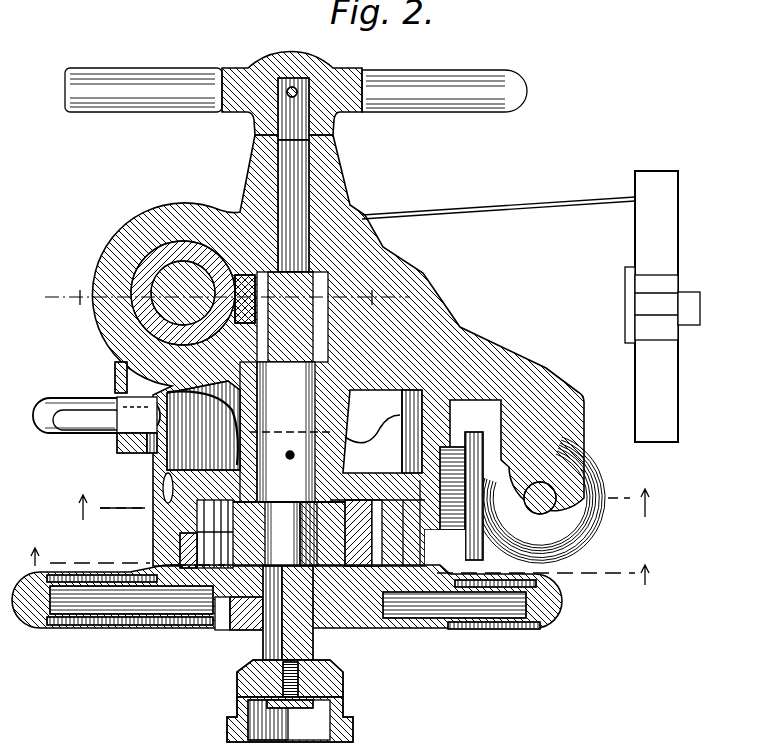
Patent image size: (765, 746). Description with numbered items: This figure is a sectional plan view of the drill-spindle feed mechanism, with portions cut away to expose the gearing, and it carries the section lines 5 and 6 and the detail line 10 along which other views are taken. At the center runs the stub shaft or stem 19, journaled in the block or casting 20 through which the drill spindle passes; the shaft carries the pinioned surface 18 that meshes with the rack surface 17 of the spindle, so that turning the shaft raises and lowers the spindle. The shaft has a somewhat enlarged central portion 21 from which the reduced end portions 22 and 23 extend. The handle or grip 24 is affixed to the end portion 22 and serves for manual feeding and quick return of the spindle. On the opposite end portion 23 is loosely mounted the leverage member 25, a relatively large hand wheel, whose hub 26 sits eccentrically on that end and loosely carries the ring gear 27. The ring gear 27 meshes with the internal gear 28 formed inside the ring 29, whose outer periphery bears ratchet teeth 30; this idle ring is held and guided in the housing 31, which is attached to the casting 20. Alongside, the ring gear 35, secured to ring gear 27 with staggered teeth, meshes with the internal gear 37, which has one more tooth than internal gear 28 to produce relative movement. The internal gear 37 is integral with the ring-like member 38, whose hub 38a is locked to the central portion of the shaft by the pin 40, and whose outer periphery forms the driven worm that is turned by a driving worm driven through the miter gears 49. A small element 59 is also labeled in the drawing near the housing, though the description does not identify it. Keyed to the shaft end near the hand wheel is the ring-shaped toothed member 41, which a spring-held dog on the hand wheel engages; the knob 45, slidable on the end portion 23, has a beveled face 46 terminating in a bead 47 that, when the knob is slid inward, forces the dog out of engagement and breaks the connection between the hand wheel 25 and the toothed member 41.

The handle or grip 24 is at (505, 70).
The reduced end portion of shaft 22 is at (276, 158).
The stub shaft or stem 19 is at (303, 191).
The pinioned surface 18 is at (347, 277).
The block or casting 20 is at (619, 306).
The section line 10- 10 is at (227, 301).
The rack surface 17 is at (352, 509).
The pin 40 is at (290, 451).
The ring-like member 38 is at (248, 477).
The hub of ring-like member 38a is at (286, 534).
The enlarged central portion of shaft 21 is at (382, 431).
The internal gear 37 is at (396, 487).
The miter gears 49 is at (600, 530).
The ring gear 35 is at (445, 548).
The reduced end portion of shaft 23 is at (338, 606).
The ring 29 is at (163, 520).
The internal gear 28 is at (175, 542).
The ratchet teeth 30 is at (180, 558).
The spring 59 is at (162, 480).
The housing 31 is at (153, 458).
The leverage member 25 is at (172, 602).
The ring gear 27 is at (396, 605).
The hub 26 is at (222, 620).
The ring-shaped toothed member 41 is at (245, 630).
The beveled face 46 is at (258, 671).
The bead 47 is at (345, 686).
The knob 45 is at (237, 707).
The section line 6- 6 is at (363, 504).
The section line 5- 5 is at (337, 566).